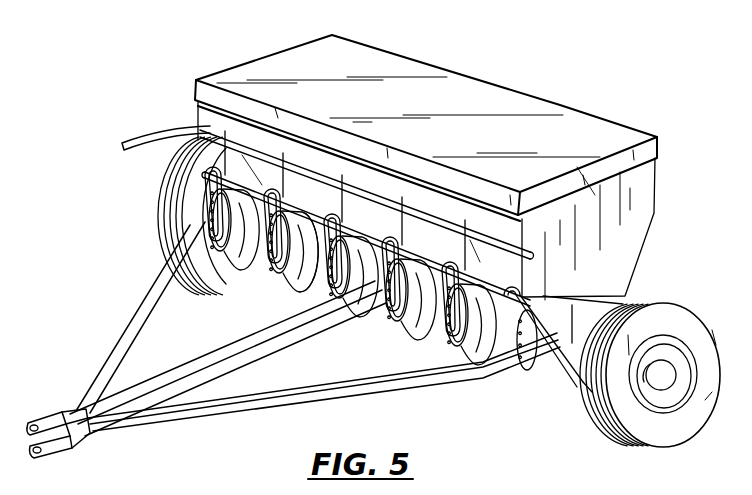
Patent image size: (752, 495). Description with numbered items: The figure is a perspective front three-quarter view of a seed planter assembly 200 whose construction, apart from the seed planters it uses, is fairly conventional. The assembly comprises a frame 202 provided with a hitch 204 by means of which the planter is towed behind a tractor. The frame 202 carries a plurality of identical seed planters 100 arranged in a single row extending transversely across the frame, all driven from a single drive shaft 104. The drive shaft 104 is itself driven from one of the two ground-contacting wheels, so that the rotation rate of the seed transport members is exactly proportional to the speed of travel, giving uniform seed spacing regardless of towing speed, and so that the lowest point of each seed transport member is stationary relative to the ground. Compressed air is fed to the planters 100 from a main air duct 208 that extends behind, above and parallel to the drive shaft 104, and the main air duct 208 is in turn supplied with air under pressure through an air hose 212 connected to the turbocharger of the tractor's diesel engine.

The seed planter assembly 200 is at (480, 73).
The frame 202 is at (640, 237).
The hitch 204 is at (120, 345).
The main air duct 208 is at (198, 110).
The air hose 212 is at (122, 141).
The seed planter 100 is at (428, 310).
The drive shaft 104 is at (300, 265).